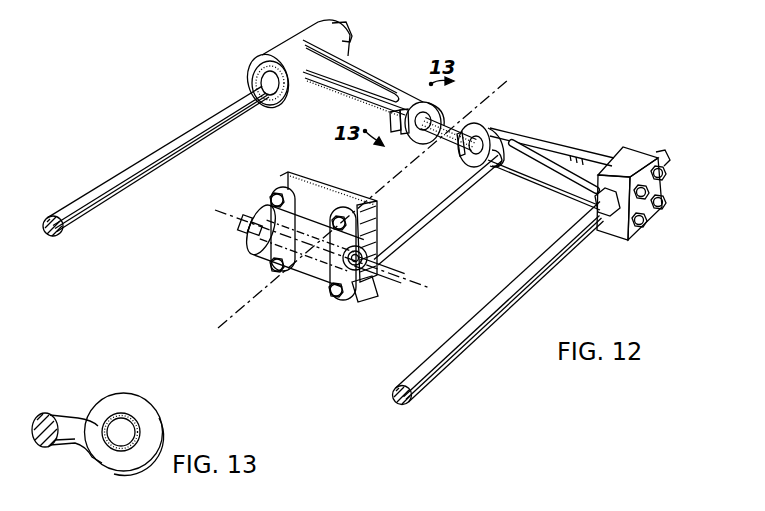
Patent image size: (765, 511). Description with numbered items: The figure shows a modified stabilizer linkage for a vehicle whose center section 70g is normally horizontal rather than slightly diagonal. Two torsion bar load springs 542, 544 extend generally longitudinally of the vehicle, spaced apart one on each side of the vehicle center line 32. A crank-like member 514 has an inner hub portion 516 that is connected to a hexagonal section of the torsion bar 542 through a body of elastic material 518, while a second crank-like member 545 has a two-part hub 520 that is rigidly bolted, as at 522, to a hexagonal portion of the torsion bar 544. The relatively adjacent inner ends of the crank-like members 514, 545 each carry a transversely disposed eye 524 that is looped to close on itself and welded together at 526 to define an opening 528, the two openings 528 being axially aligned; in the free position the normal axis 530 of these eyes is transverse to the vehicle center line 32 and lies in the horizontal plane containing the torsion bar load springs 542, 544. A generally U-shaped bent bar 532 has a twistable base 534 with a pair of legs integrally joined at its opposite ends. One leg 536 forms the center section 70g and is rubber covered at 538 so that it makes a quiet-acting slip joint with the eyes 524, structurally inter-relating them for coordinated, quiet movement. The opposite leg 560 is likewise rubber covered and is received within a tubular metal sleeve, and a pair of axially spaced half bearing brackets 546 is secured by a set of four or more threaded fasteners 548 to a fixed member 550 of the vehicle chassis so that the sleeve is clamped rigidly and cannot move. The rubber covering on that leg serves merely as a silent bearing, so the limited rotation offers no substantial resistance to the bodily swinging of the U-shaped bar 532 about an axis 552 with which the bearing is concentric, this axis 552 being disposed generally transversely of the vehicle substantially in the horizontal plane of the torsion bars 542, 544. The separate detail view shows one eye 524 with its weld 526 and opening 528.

In FIG. 12, the inner hub portion 516 is at (284, 50).
In FIG. 12, the crank-like member 514 is at (348, 77).
In FIG. 12, the body of elastic material 518 is at (271, 104).
In FIG. 12, the torsion bar load spring 542 is at (98, 209).
In FIG. 12, the torsion bar load spring 544 is at (433, 373).
In FIG. 12, the crank-like member 545 is at (563, 153).
In FIG. 12, the two-part hub 520 is at (637, 150).
In FIG. 12, the axis 552 is at (663, 207).
In FIG. 12, the rubber covering 538 is at (464, 136).
In FIG. 12, the eye 524 is at (468, 168).
In FIG. 13, the eye 524 is at (145, 412).
In FIG. 12, the normal axis of the eyes 530 is at (522, 172).
In FIG. 12, the leg 536 is at (497, 172).
In FIG. 12, the twistable base 534 is at (420, 235).
In FIG. 12, the bolts 522 is at (398, 273).
In FIG. 12, the U-shaped bent bar 532 is at (373, 278).
In FIG. 12, the half bearing brackets 546 is at (258, 250).
In FIG. 12, the threaded fasteners 548 is at (275, 200).
In FIG. 12, the fixed member of vehicle chassis 550 is at (315, 197).
In FIG. 12, the leg 560 is at (240, 226).
In FIG. 12, the vehicle center line 32 is at (228, 316).
In FIG. 12, the center section 70g is at (395, 118).
In FIG. 13, the weld 526 is at (97, 423).
In FIG. 13, the opening 528 is at (100, 445).